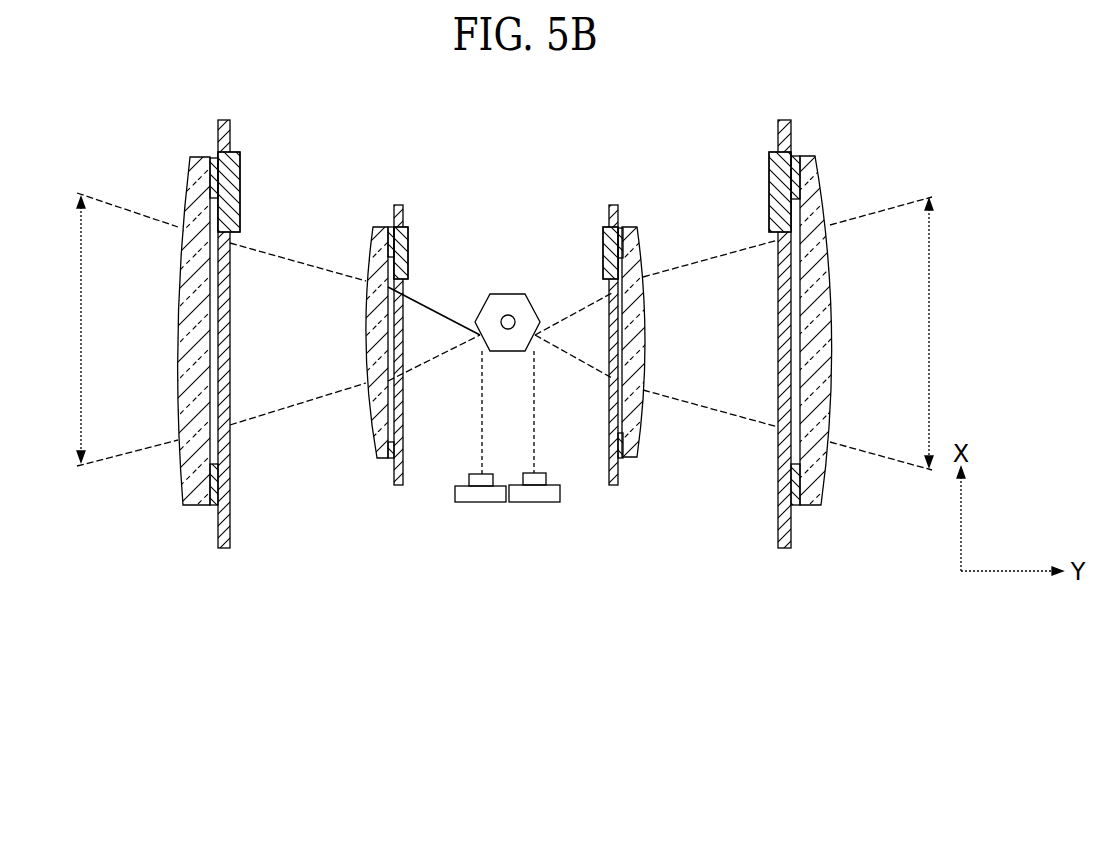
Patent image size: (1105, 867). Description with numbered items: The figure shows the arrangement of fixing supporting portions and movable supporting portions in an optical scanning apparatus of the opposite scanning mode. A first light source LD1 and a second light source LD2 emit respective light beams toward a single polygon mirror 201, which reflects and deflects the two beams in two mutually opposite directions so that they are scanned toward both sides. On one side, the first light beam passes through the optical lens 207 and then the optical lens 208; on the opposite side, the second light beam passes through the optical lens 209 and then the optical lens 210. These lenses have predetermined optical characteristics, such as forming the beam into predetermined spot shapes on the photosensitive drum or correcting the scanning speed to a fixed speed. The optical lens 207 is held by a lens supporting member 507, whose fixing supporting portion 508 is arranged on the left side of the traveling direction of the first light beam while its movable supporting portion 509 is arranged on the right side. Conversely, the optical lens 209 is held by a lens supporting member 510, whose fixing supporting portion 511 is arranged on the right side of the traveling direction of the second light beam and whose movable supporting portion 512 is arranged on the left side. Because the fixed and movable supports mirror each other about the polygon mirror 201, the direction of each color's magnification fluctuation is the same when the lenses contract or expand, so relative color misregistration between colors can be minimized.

The polygon mirror 201 is at (510, 294).
The optical lens 207 is at (368, 430).
The optical lens 208 is at (180, 470).
The optical lens 209 is at (642, 445).
The optical lens 210 is at (824, 482).
The lens supporting member 507 is at (403, 330).
The fixing supporting portion 508 is at (392, 458).
The movable supporting portion 509 is at (407, 232).
The lens supporting member 510 is at (612, 458).
The fixing supporting portion 511 is at (622, 460).
The movable supporting portion 512 is at (603, 243).
The first light source LD1 is at (477, 503).
The second light source LD2 is at (530, 503).